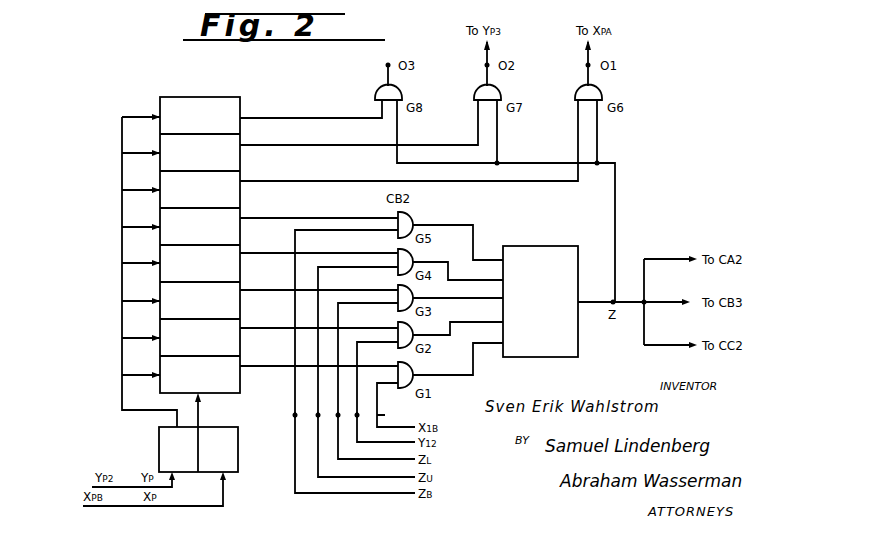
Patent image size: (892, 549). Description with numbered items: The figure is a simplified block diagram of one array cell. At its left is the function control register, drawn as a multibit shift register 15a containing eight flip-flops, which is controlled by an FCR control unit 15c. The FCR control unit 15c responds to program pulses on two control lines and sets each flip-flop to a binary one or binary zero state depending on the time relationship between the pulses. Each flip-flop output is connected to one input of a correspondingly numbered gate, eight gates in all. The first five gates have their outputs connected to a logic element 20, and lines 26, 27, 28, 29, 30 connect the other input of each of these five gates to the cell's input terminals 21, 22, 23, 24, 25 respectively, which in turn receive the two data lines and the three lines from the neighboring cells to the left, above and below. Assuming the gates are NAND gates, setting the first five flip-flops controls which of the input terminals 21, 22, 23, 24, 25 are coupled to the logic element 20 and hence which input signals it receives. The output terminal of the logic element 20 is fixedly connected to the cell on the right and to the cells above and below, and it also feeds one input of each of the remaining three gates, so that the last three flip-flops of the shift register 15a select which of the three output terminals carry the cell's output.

The multibit shift register 15a is at (229, 98).
The FCR control unit 15c is at (159, 434).
The logic element 20 is at (553, 352).
The input terminal 21 is at (396, 405).
The input terminal 22 is at (357, 415).
The input terminal 23 is at (338, 415).
The input terminal 24 is at (318, 415).
The input terminal 25 is at (295, 415).
The line 26 is at (378, 398).
The line 27 is at (338, 401).
The line 28 is at (338, 381).
The line 29 is at (318, 361).
The line 30 is at (295, 343).